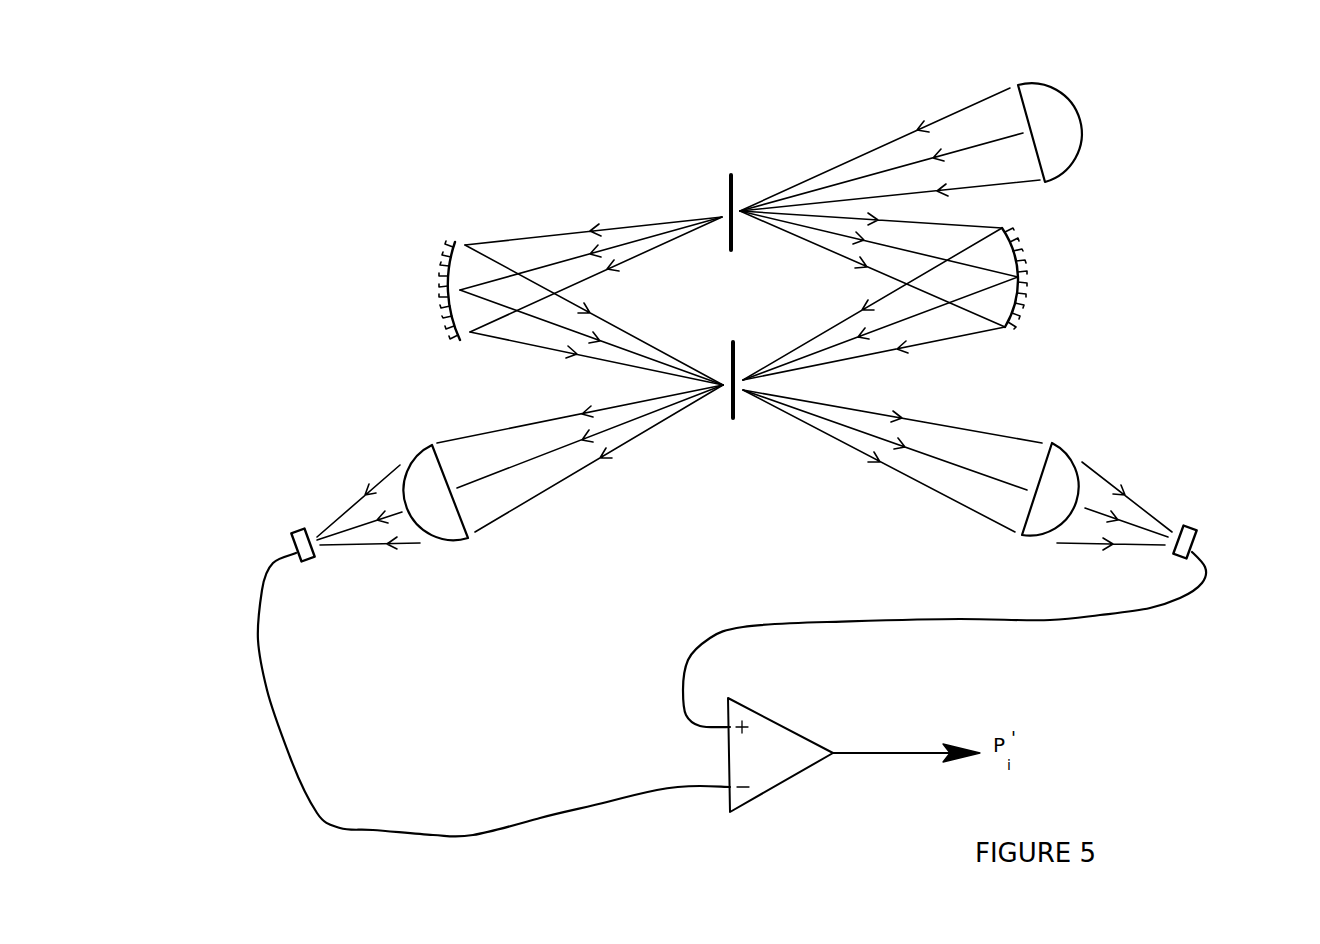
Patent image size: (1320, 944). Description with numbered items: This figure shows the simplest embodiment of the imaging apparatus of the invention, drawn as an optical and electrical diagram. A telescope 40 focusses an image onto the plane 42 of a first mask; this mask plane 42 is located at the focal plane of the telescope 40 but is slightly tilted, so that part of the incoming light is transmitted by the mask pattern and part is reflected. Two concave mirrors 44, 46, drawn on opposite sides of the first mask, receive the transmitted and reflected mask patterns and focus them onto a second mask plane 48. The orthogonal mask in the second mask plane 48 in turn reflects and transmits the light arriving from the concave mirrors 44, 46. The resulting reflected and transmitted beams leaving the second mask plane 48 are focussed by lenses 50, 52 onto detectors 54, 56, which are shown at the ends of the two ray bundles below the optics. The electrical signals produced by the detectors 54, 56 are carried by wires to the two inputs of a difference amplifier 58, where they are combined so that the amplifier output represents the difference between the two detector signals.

The telescope 40 is at (1043, 80).
The plane of a first mask 42 is at (722, 183).
The concave mirror 44 is at (432, 268).
The concave mirror 46 is at (1028, 238).
The second mask plane 48 is at (742, 352).
The lens 50 is at (473, 547).
The lens 52 is at (1058, 442).
The detector 54 is at (318, 563).
The detector 56 is at (1202, 532).
The difference amplifier 58 is at (787, 788).